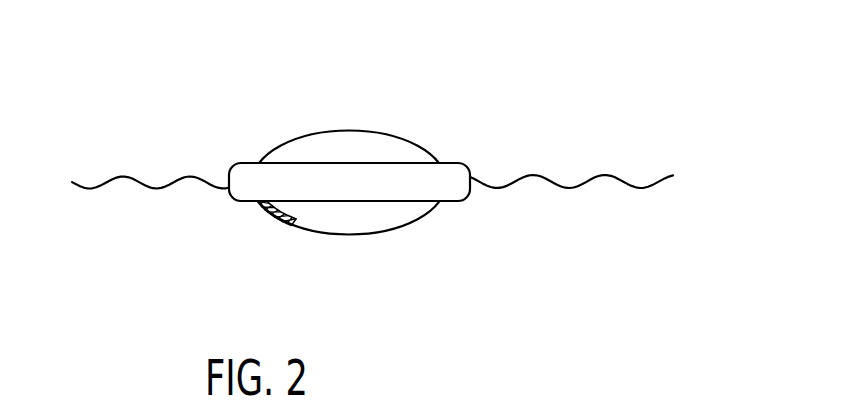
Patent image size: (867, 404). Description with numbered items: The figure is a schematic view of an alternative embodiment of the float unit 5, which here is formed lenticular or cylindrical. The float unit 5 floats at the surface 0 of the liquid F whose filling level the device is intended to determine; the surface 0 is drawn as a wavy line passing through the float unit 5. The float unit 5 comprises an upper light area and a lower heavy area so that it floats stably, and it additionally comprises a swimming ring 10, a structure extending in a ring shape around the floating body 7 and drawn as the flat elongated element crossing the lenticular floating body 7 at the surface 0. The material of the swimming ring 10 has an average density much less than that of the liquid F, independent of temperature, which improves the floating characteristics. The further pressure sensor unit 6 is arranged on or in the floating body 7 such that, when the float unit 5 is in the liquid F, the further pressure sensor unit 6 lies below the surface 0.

The surface 0 is at (551, 181).
The float unit 5 is at (365, 146).
The further pressure sensor unit 6 is at (263, 205).
The floating body 7 is at (303, 137).
The swimming ring 10 is at (238, 176).
The liquid F is at (153, 262).